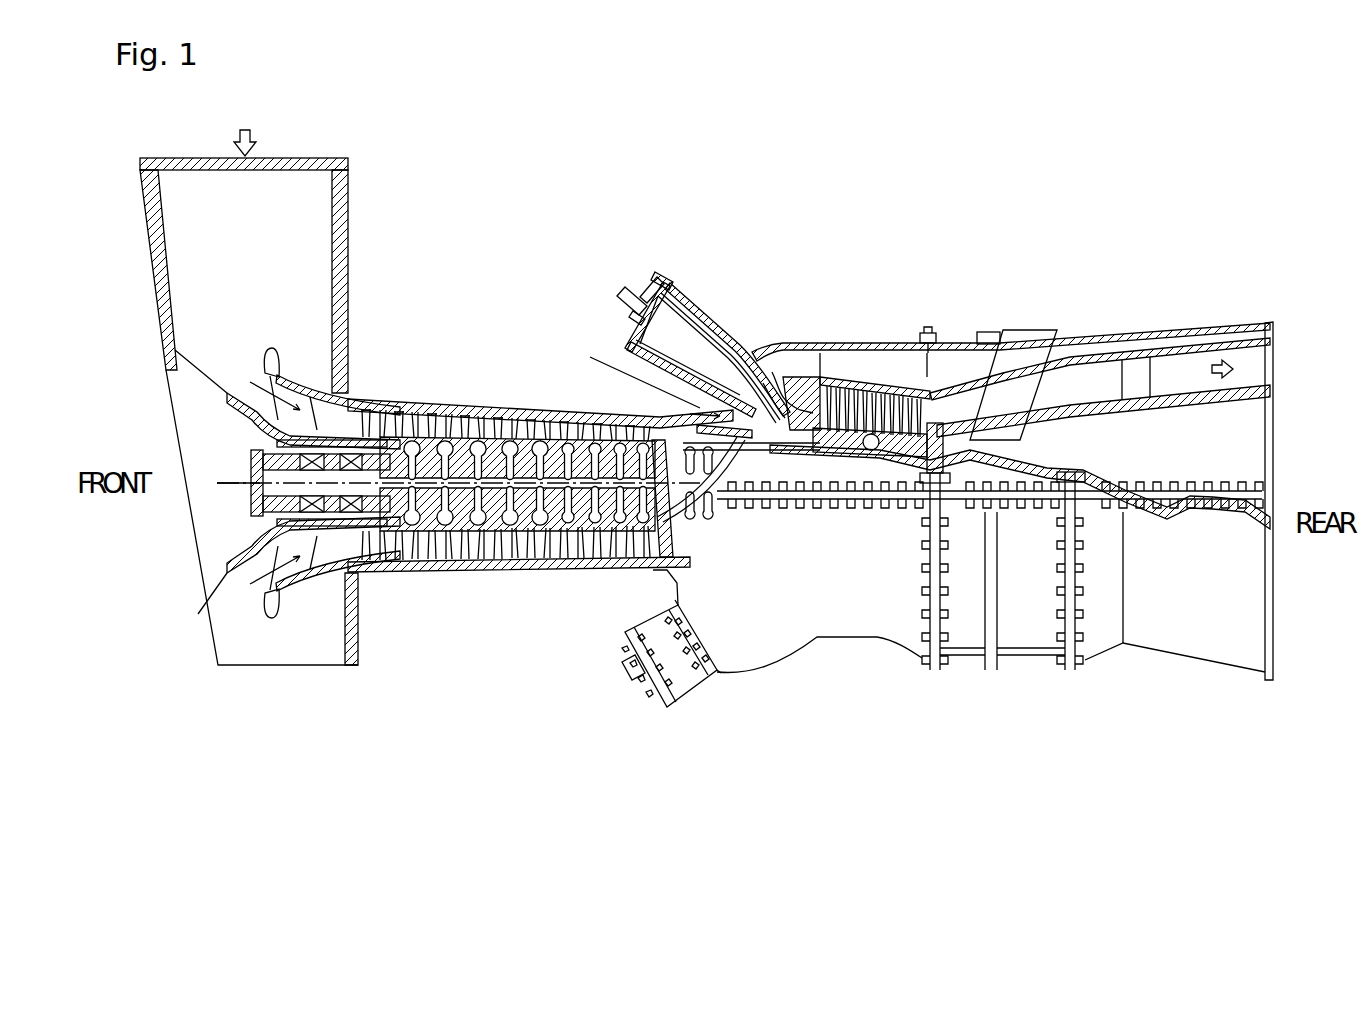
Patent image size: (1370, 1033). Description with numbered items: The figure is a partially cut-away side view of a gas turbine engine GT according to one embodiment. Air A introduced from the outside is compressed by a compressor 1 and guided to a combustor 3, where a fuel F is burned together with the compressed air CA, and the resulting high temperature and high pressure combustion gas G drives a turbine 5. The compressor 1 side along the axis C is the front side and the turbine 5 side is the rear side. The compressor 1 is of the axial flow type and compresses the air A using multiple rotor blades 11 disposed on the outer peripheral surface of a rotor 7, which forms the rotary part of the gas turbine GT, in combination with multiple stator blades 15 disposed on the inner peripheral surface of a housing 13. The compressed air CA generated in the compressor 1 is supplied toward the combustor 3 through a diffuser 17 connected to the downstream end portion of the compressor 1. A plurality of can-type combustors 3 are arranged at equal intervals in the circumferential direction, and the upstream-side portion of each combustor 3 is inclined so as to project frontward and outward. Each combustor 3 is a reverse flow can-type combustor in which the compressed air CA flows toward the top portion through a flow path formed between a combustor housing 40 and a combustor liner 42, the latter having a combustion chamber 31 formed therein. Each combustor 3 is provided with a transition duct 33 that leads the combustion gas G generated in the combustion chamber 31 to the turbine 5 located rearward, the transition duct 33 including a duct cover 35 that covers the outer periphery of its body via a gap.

The compressor 1 is at (527, 589).
The combustor 3 is at (694, 284).
The turbine 5 is at (868, 370).
The rotor 7 is at (692, 495).
The rotor blades 11 is at (395, 558).
The housing 13 is at (466, 404).
The stator blades 15 is at (410, 410).
The diffuser 17 is at (681, 393).
The combustion chamber 31 is at (700, 353).
The transition duct 33 is at (762, 355).
The duct cover 35 is at (800, 372).
The combustor housing 40 is at (700, 300).
The combustor liner 42 is at (707, 327).
The air A is at (250, 133).
The axis C is at (230, 474).
The compressed air CA is at (673, 399).
The fuel F is at (607, 285).
The combustion gas G is at (772, 385).
The gas turbine engine GT is at (513, 262).